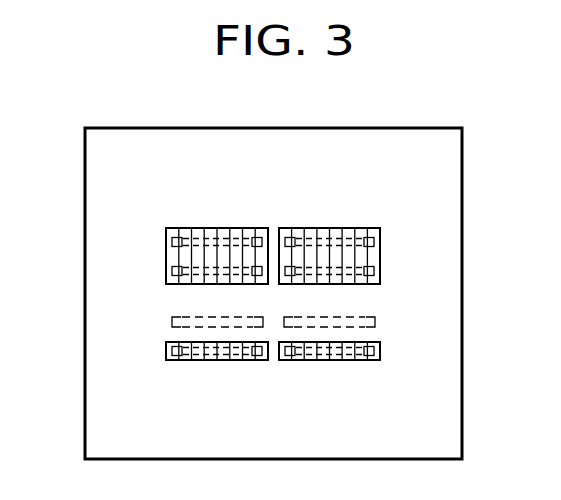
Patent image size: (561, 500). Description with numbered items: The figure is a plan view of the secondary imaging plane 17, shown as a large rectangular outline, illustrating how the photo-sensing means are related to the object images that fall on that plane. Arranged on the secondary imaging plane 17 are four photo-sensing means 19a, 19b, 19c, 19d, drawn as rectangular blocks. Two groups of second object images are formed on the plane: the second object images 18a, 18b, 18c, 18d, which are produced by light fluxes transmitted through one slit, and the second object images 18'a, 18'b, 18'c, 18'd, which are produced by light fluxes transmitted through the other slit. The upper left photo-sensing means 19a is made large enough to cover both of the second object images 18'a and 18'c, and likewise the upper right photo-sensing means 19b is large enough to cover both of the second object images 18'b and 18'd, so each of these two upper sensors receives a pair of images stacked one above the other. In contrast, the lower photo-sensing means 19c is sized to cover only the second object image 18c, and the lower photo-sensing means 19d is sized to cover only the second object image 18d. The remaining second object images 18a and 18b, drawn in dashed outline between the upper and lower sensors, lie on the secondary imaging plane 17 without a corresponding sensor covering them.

The secondary imaging plane 17 is at (97, 152).
The photo-sensing means 19a is at (200, 228).
The photo-sensing means 19b is at (320, 228).
The photo-sensing means 19c is at (208, 361).
The photo-sensing means 19d is at (335, 361).
The second object image 18'a is at (147, 242).
The second object image 18'b is at (398, 242).
The second object image 18'c is at (147, 279).
The second object image 18'd is at (398, 279).
The second object image 18a is at (172, 324).
The second object image 18b is at (375, 324).
The second object image 18c is at (172, 352).
The second object image 18d is at (374, 352).